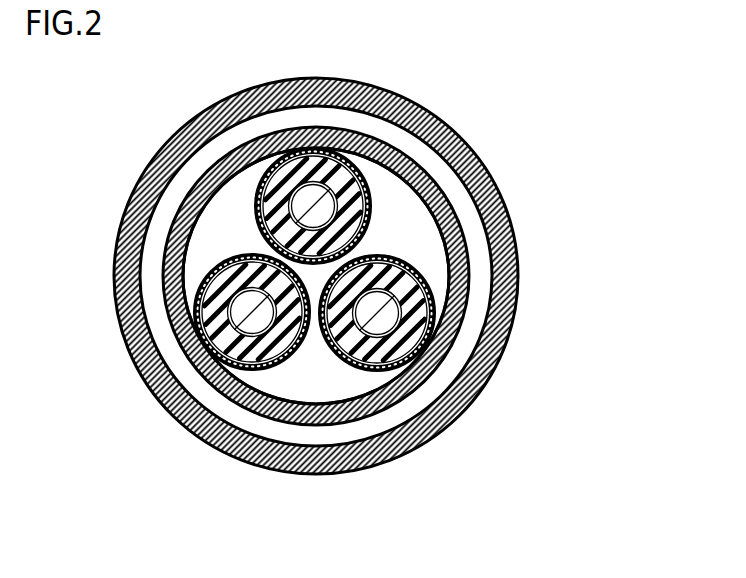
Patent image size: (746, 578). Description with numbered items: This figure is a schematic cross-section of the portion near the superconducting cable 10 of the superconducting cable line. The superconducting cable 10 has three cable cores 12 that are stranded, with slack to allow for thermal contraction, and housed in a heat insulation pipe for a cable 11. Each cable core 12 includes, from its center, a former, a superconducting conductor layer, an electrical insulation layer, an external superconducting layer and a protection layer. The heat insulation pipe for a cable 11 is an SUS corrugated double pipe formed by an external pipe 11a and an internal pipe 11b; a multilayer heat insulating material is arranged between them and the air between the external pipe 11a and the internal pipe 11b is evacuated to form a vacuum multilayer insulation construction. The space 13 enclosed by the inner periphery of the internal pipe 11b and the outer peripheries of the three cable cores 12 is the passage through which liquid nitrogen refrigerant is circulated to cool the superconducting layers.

The superconducting cable 10 is at (390, 293).
The heat insulation pipe for a cable 11 is at (390, 254).
The external pipe 11a is at (364, 276).
The internal pipe 11b is at (620, 135).
The cable core 12 is at (455, 506).
The space 13 is at (381, 276).